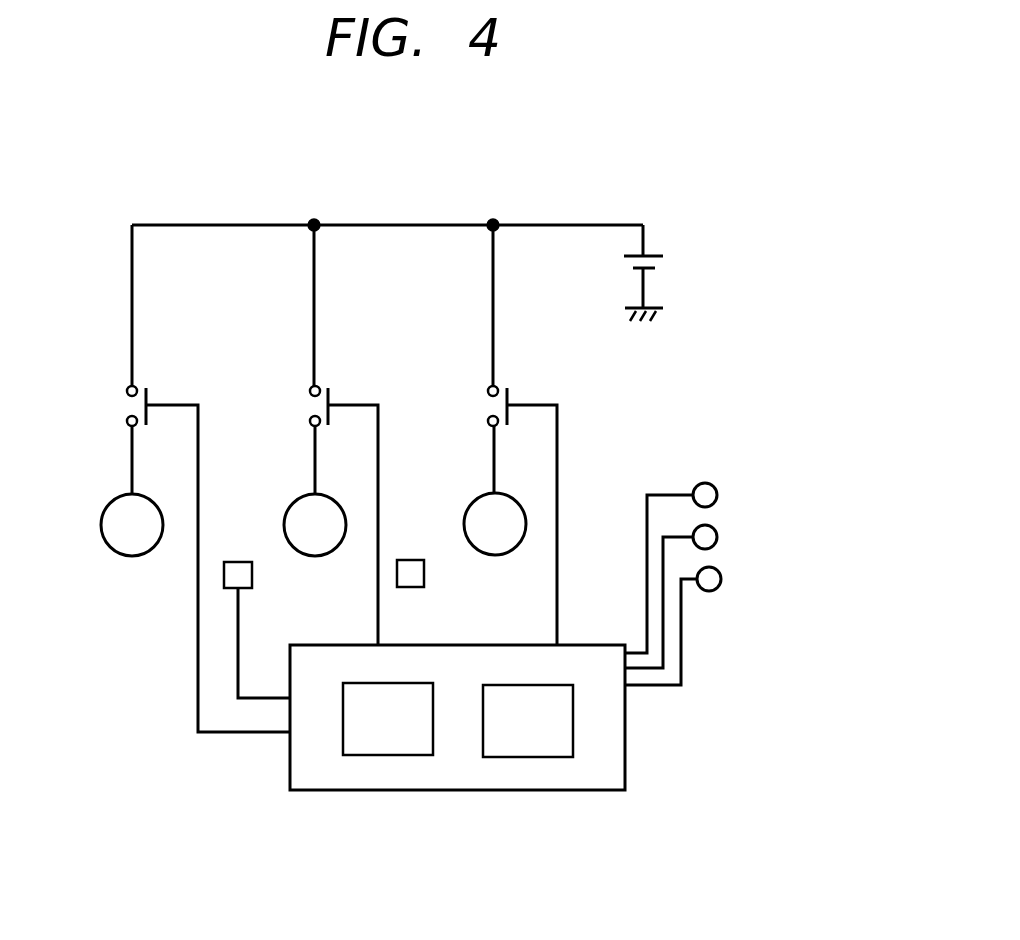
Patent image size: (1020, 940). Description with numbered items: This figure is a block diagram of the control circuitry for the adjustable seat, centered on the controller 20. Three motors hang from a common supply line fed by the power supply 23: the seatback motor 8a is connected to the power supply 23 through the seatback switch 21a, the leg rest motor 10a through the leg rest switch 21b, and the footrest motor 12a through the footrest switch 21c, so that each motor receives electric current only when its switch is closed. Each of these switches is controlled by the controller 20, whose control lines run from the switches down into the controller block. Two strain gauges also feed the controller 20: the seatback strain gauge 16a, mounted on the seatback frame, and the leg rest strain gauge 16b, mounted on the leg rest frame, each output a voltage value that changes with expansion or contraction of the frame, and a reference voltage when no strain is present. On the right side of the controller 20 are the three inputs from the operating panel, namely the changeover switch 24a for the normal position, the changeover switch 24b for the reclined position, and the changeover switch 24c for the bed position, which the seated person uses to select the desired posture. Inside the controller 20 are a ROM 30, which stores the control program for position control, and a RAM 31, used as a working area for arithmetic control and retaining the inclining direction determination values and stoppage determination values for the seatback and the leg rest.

The power supply 23 is at (655, 254).
The seatback switch 21a is at (126, 388).
The leg rest switch 21b is at (310, 390).
The footrest switch 21c is at (488, 391).
The seatback motor 8a is at (127, 555).
The leg rest motor 10a is at (296, 512).
The footrest motor 12a is at (470, 512).
The seatback strain gauge 16a is at (254, 573).
The leg rest strain gauge 16b is at (425, 573).
The controller 20 is at (612, 790).
The RAM 31 is at (376, 746).
The ROM 30 is at (513, 750).
The changeover switch for the normal position 24a is at (718, 492).
The changeover switch for the reclined position 24b is at (718, 538).
The changeover switch for the bed position 24c is at (720, 588).